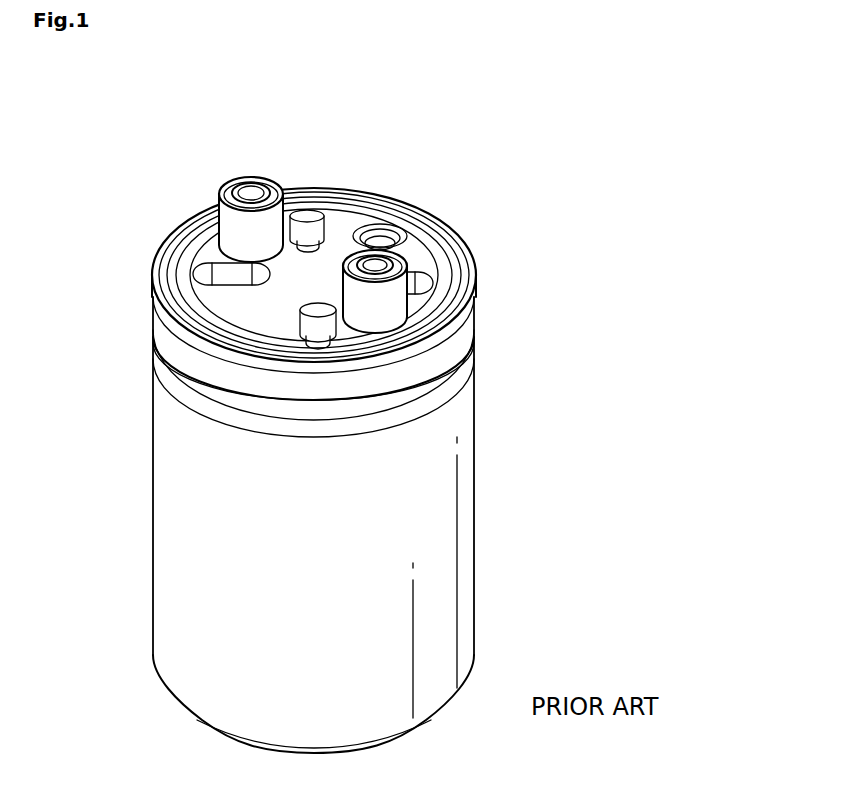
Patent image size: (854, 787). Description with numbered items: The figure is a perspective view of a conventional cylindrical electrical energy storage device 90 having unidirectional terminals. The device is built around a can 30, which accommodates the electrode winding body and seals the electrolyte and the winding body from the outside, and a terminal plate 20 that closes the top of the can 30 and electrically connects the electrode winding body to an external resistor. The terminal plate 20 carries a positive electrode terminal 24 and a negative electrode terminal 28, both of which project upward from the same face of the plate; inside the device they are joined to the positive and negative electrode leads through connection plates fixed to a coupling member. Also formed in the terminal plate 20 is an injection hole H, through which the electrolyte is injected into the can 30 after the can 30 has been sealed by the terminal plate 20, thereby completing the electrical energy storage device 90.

The electrical energy storage device 90 is at (339, 94).
The terminal plate 20 is at (481, 266).
The positive electrode terminal 24 is at (240, 229).
The negative electrode terminal 28 is at (395, 302).
The can 30 is at (481, 535).
The injection hole H is at (379, 231).